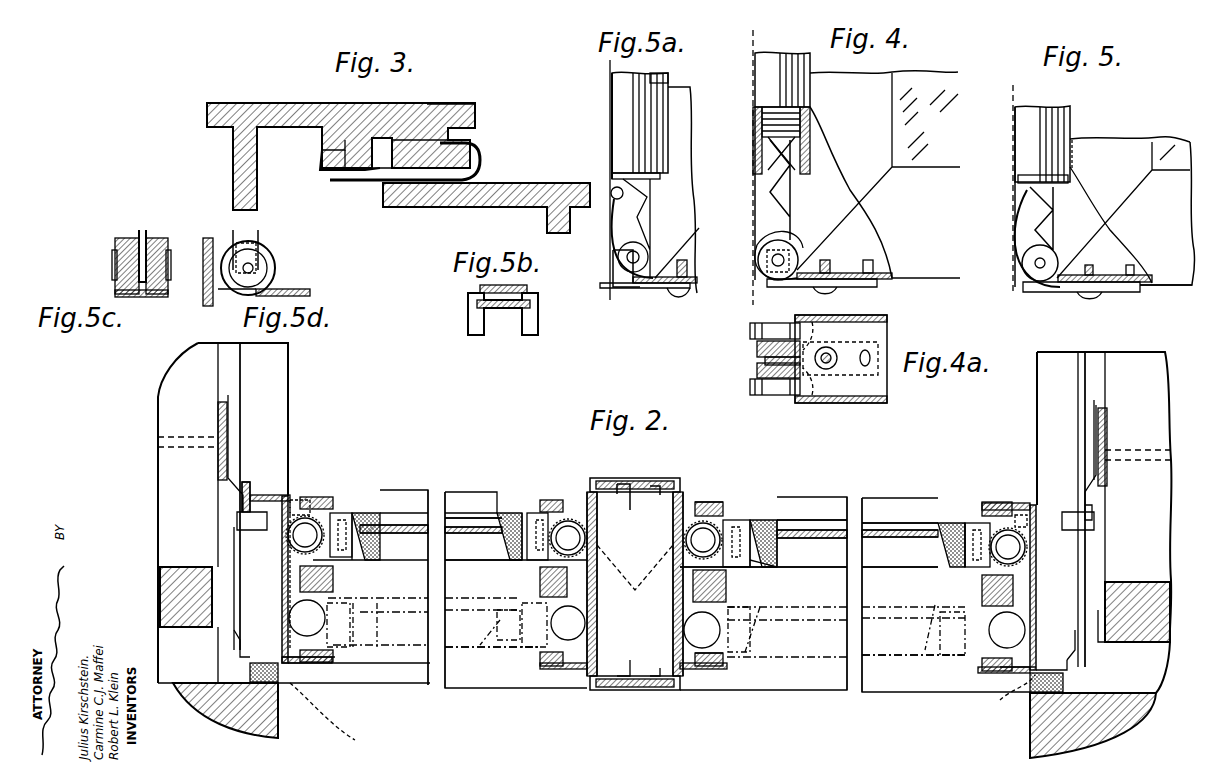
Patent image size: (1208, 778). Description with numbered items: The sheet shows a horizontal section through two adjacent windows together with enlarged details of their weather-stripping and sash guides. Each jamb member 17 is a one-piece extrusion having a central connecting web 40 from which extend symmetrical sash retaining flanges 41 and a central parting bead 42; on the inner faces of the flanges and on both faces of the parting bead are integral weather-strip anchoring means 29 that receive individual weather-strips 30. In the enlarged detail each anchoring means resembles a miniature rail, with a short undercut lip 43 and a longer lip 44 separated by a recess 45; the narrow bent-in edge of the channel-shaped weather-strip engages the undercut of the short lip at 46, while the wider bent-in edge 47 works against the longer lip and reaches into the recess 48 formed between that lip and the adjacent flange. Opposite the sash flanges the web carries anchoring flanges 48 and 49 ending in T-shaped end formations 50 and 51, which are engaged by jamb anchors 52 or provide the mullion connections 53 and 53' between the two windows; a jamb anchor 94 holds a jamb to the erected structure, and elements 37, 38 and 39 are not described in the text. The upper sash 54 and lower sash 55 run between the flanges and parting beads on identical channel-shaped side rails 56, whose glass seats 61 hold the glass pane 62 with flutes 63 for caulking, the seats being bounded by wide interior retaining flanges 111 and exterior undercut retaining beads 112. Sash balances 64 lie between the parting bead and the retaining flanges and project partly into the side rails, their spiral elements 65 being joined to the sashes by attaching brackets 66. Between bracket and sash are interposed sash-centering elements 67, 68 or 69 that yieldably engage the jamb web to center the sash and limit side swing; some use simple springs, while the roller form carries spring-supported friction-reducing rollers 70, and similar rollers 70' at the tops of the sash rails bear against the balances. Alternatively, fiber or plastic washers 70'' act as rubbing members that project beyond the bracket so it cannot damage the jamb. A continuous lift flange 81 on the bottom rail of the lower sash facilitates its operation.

In FIG. 3, the jamb member 17 is at (248, 102).
In FIG. 2, the jamb member 17 is at (659, 691).
In FIG. 3, the weather-strip anchoring means 29 is at (385, 165).
In FIG. 2, the weather-strip anchoring means 29 is at (706, 500).
In FIG. 3, the weather-strip 30 is at (478, 145).
In FIG. 2, the weather-strip 30 is at (334, 590).
In FIG. 2, the bottom rail 37 is at (296, 684).
In FIG. 2, the jamb post 38 is at (298, 498).
In FIG. 2, the frame channel 39 is at (277, 570).
In FIG. 3, the central connecting web 40 is at (233, 186).
In FIG. 5A, the central connecting web 40 is at (609, 97).
In FIG. 4, the central connecting web 40 is at (755, 192).
In FIG. 5, the central connecting web 40 is at (1018, 190).
In FIG. 2, the central connecting web 40 is at (597, 603).
In FIG. 3, the sash retaining flange 41 is at (425, 104).
In FIG. 2, the sash retaining flange 41 is at (325, 496).
In FIG. 2, the parting bead 42 is at (334, 580).
In FIG. 3, the undercut lip 43 is at (322, 165).
In FIG. 3, the longer lip 44 is at (480, 160).
In FIG. 3, the recess 45 is at (352, 160).
In FIG. 3, the engagement of narrow bent-in edge 46 is at (308, 138).
In FIG. 3, the wider bent-in edge 47 is at (455, 138).
In FIG. 3, the anchoring flange 48 is at (470, 108).
In FIG. 2, the anchoring flange 48 is at (290, 494).
In FIG. 2, the anchoring flange 49 is at (1094, 686).
In FIG. 2, the T-shaped end formation 50 is at (246, 490).
In FIG. 2, the T-shaped end formation 51 is at (250, 668).
In FIG. 2, the jamb anchor 52 is at (662, 505).
In FIG. 2, the mullion connection 53 is at (635, 471).
In FIG. 2, the mullion connection 53' is at (635, 697).
In FIG. 4, the upper sash 54 is at (926, 292).
In FIG. 5, the upper sash 54 is at (1166, 301).
In FIG. 2, the upper sash 54 is at (658, 514).
In FIG. 2, the lower sash 55 is at (705, 686).
In FIG. 2, the side rail 56 is at (362, 512).
In FIG. 2, the glass seat 61 is at (500, 564).
In FIG. 2, the glass pane 62 is at (468, 533).
In FIG. 2, the flute 63 is at (515, 556).
In FIG. 5A, the sash balance 64 is at (625, 117).
In FIG. 4, the sash balance 64 is at (768, 88).
In FIG. 5, the sash balance 64 is at (1072, 122).
In FIG. 2, the sash balance 64 is at (670, 560).
In FIG. 5C, the spiral element 65 is at (139, 235).
In FIG. 5D, the spiral element 65 is at (255, 235).
In FIG. 5A, the spiral element 65 is at (645, 215).
In FIG. 4, the spiral element 65 is at (795, 222).
In FIG. 5, the spiral element 65 is at (1058, 240).
In FIG. 4A, the spiral element 65 is at (765, 361).
In FIG. 5C, the attaching bracket 66 is at (138, 298).
In FIG. 5D, the attaching bracket 66 is at (300, 289).
In FIG. 5A, the attaching bracket 66 is at (618, 292).
In FIG. 4, the attaching bracket 66 is at (862, 291).
In FIG. 5, the attaching bracket 66 is at (1105, 298).
In FIG. 4A, the attaching bracket 66 is at (757, 349).
In FIG. 4, the sash-centering element 67 is at (757, 278).
In FIG. 4A, the sash-centering element 67 is at (750, 387).
In FIG. 5, the sash-centering element 68 is at (1020, 258).
In FIG. 5B, the sash-centering element 69 is at (470, 321).
In FIG. 5A, the sash-centering element 69 is at (633, 280).
In FIG. 5B, the friction-reducing roller 70 is at (482, 294).
In FIG. 5A, the friction-reducing roller 70 is at (612, 217).
In FIG. 2, the guide roller 70' is at (650, 489).
In FIG. 5C, the washer 70'' is at (131, 259).
In FIG. 5D, the washer 70'' is at (259, 268).
In FIG. 2, the lift flange 81 is at (432, 488).
In FIG. 2, the jamb anchor 94 is at (232, 412).
In FIG. 2, the interior retaining flange 111 is at (770, 518).
In FIG. 2, the exterior undercut retaining bead 112 is at (760, 570).